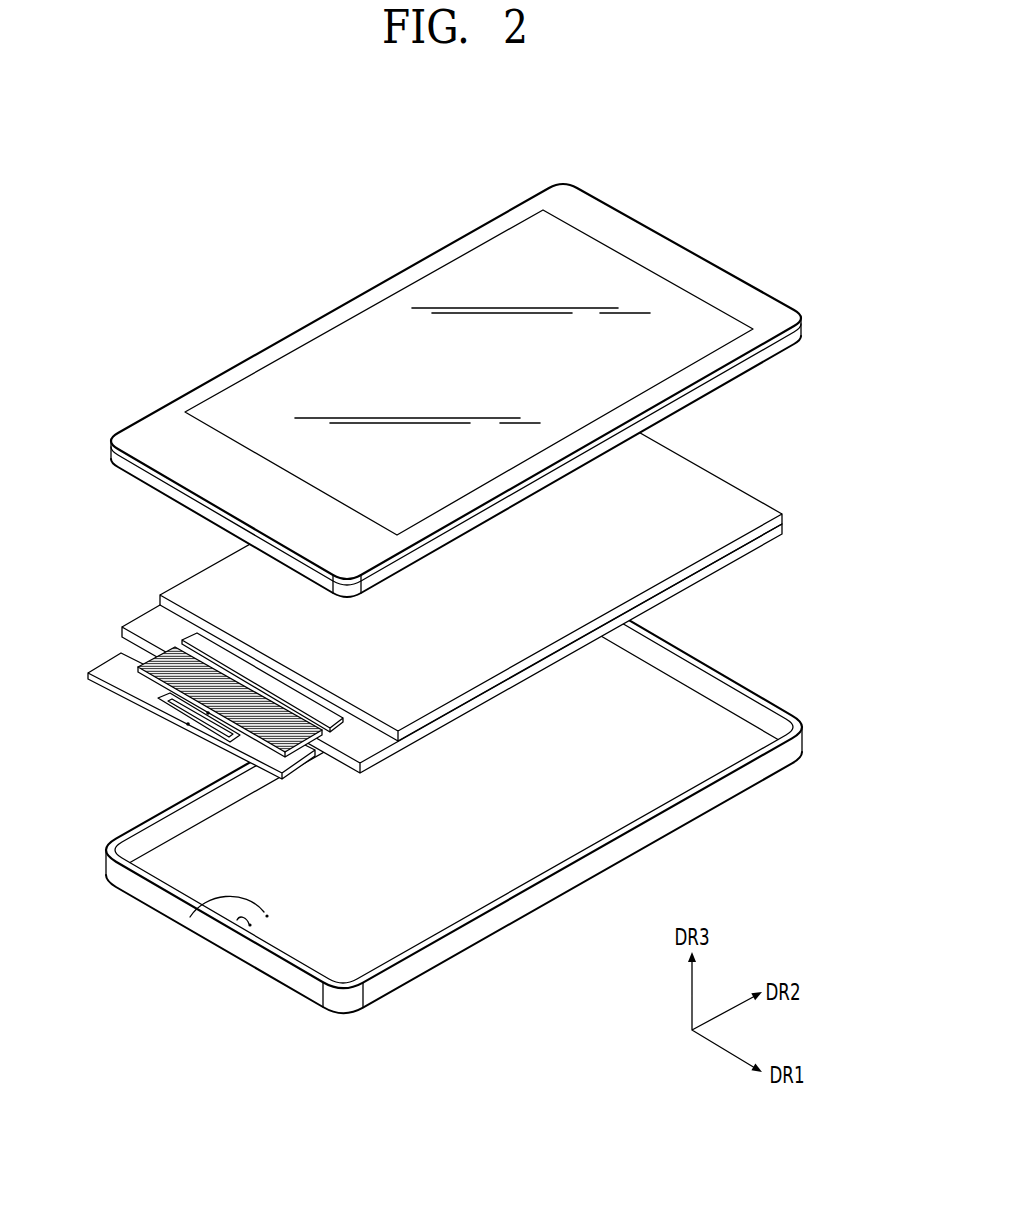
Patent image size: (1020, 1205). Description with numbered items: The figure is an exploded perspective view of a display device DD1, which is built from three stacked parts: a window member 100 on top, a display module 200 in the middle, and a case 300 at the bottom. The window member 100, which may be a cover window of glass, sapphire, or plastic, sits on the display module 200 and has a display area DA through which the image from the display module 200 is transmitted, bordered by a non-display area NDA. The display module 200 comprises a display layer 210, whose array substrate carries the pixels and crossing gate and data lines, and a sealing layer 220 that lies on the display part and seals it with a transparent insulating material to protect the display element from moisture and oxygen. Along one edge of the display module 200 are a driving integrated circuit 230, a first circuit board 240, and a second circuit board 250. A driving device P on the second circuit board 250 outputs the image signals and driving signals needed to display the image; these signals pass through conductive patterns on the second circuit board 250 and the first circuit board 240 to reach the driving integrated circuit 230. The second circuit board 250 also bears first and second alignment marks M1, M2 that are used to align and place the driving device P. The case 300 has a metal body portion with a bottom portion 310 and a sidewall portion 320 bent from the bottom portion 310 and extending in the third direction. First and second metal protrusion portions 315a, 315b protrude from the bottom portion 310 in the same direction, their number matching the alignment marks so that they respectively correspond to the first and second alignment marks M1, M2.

The window member 100 is at (475, 380).
The display area DA is at (621, 283).
The non-display area NDA is at (708, 273).
The display device DD1 is at (281, 216).
The display module 200 is at (496, 575).
The display layer 210 is at (784, 528).
The sealing layer 220 is at (784, 516).
The driving integrated circuit 230 is at (183, 640).
The first circuit board 240 is at (142, 658).
The second circuit board 250 is at (105, 670).
The driving device P is at (218, 731).
The first alignment mark M1 is at (205, 712).
The second alignment mark M2 is at (185, 724).
The case 300 is at (495, 801).
The bottom portion 310 is at (697, 712).
The sidewall portion 320 is at (750, 688).
The first metal protrusion portion 315a is at (237, 920).
The second metal protrusion portion 315b is at (190, 917).